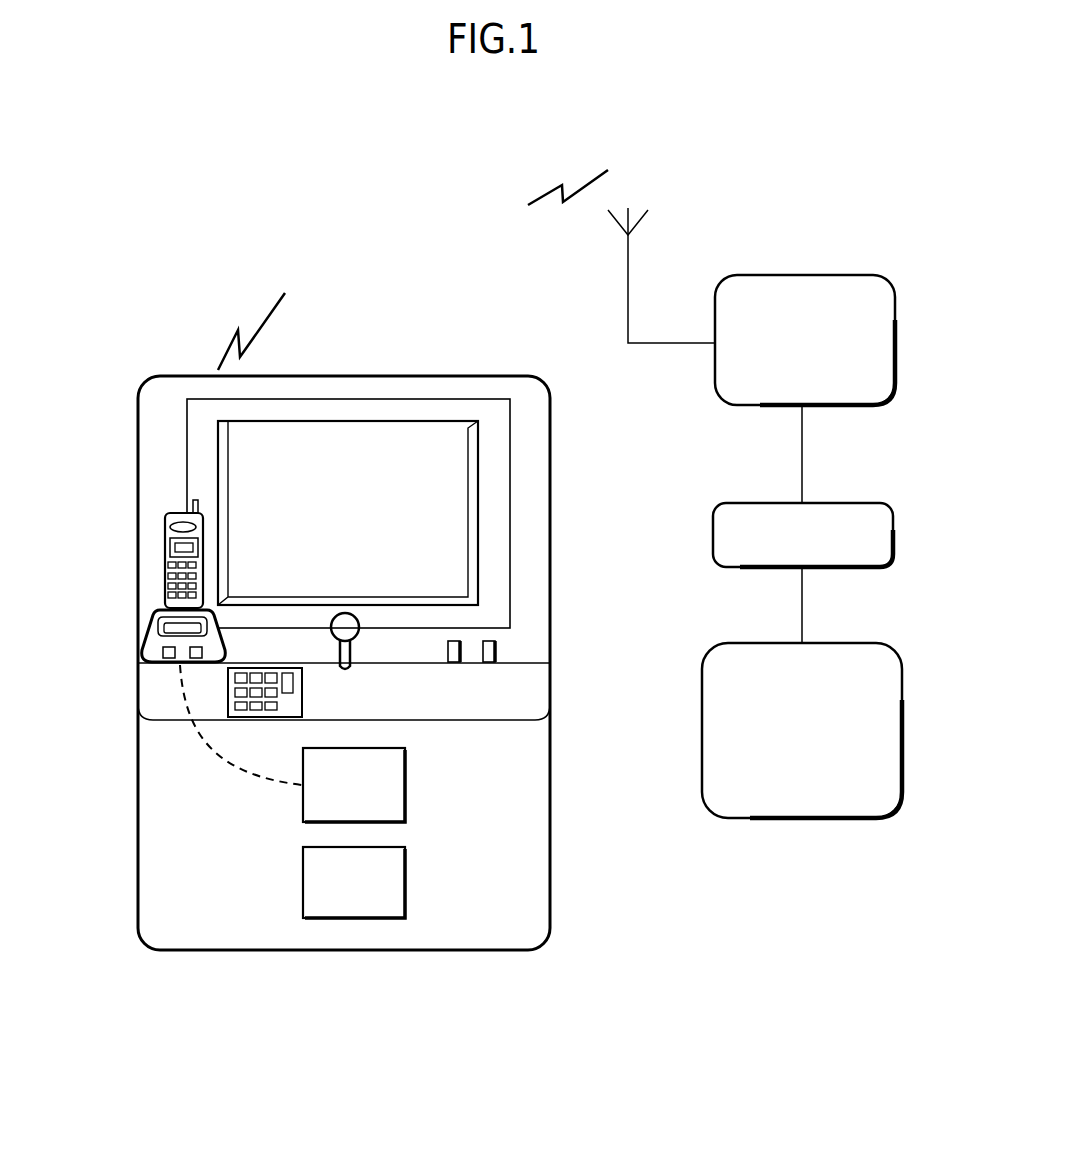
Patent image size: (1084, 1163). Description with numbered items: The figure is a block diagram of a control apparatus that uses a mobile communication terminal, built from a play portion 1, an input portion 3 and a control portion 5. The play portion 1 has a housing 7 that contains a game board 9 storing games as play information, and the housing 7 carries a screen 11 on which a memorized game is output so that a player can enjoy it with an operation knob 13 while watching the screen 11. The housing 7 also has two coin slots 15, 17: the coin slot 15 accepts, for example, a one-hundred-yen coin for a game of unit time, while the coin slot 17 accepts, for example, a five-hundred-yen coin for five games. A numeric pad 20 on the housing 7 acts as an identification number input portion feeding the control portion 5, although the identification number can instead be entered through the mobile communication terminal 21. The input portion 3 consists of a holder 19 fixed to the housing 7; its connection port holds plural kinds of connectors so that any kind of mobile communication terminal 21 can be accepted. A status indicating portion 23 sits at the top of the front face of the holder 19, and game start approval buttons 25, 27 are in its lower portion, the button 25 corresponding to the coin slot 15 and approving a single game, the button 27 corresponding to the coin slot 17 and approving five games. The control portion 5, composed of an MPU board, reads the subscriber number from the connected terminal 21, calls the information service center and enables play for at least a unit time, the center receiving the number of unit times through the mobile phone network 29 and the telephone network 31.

The play portion 1 is at (467, 375).
The input portion 3 is at (148, 617).
The control portion 5 is at (300, 813).
The housing 7 is at (550, 548).
The game board 9 is at (343, 920).
The screen 11 is at (472, 477).
The operation knob 13 is at (352, 613).
The coin slot 15 is at (452, 640).
The coin slot 17 is at (489, 643).
The holder 19 is at (145, 640).
The numeric pad 20 is at (302, 683).
The mobile communication terminal 21 is at (167, 558).
The status indicating portion 23 is at (153, 672).
The game start approval button 25 is at (170, 656).
The game start approval button 27 is at (833, 642).
The mobile phone network 29 is at (835, 273).
The telephone network 31 is at (823, 503).